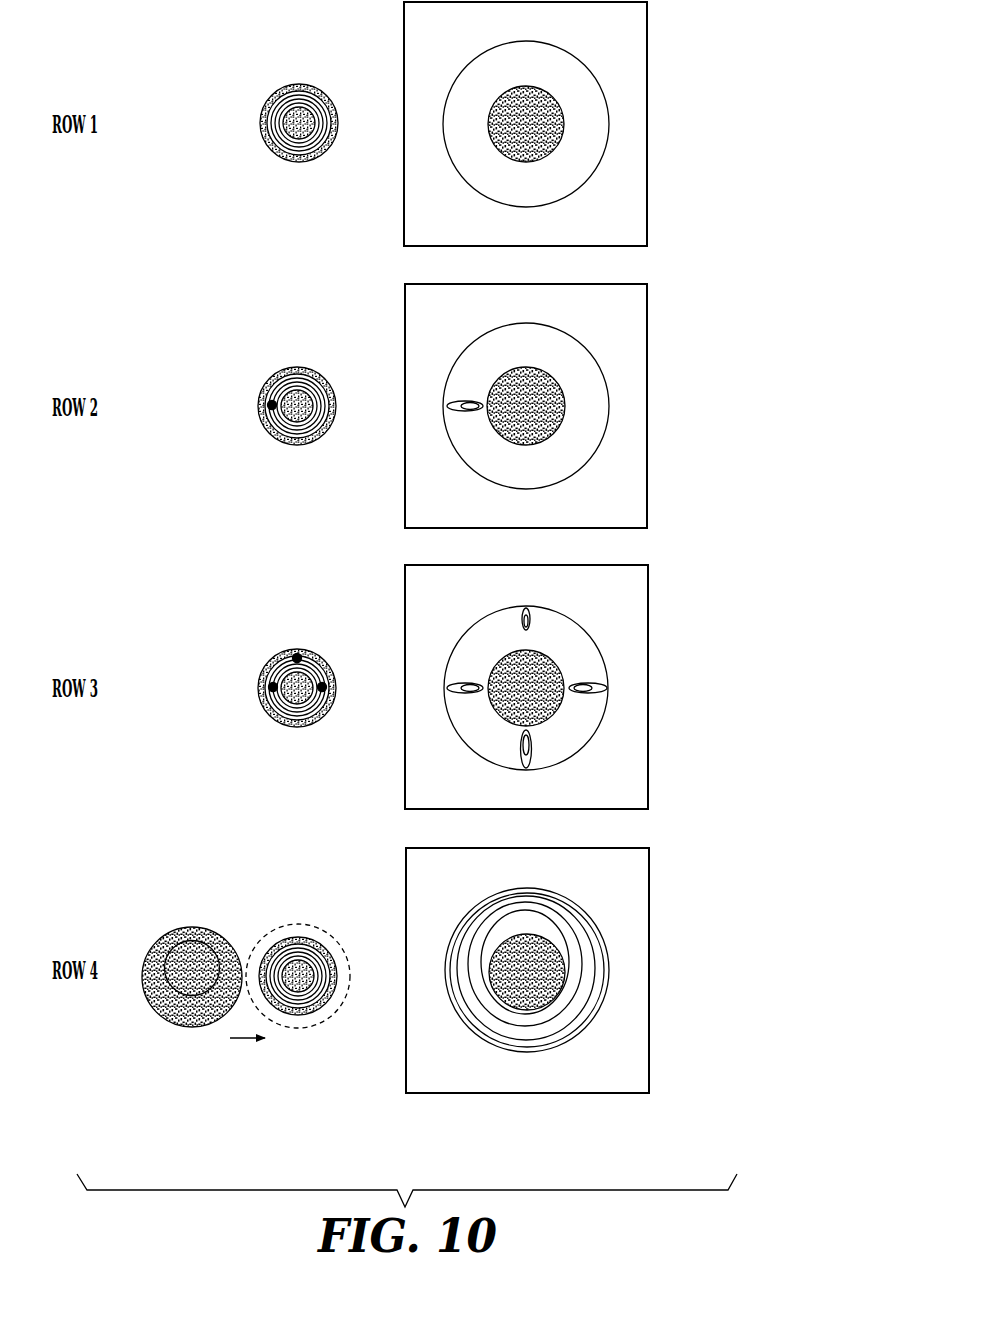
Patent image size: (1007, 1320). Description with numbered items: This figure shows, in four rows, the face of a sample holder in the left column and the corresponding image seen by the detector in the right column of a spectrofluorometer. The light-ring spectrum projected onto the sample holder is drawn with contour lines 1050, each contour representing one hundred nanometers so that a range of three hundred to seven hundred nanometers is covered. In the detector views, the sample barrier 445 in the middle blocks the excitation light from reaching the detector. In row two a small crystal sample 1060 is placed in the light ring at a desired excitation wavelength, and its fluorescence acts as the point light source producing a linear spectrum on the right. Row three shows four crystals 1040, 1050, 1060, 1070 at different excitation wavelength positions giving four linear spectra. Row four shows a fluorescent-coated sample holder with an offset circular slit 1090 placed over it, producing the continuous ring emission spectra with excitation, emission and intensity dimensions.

The sample barrier 445 is at (552, 97).
The contour lines 1050 is at (283, 107).
The small crystal sample 1060 is at (268, 406).
The crystal 1070 is at (298, 655).
The crystal 1040 is at (325, 688).
The offset circular slit 1090 is at (192, 930).